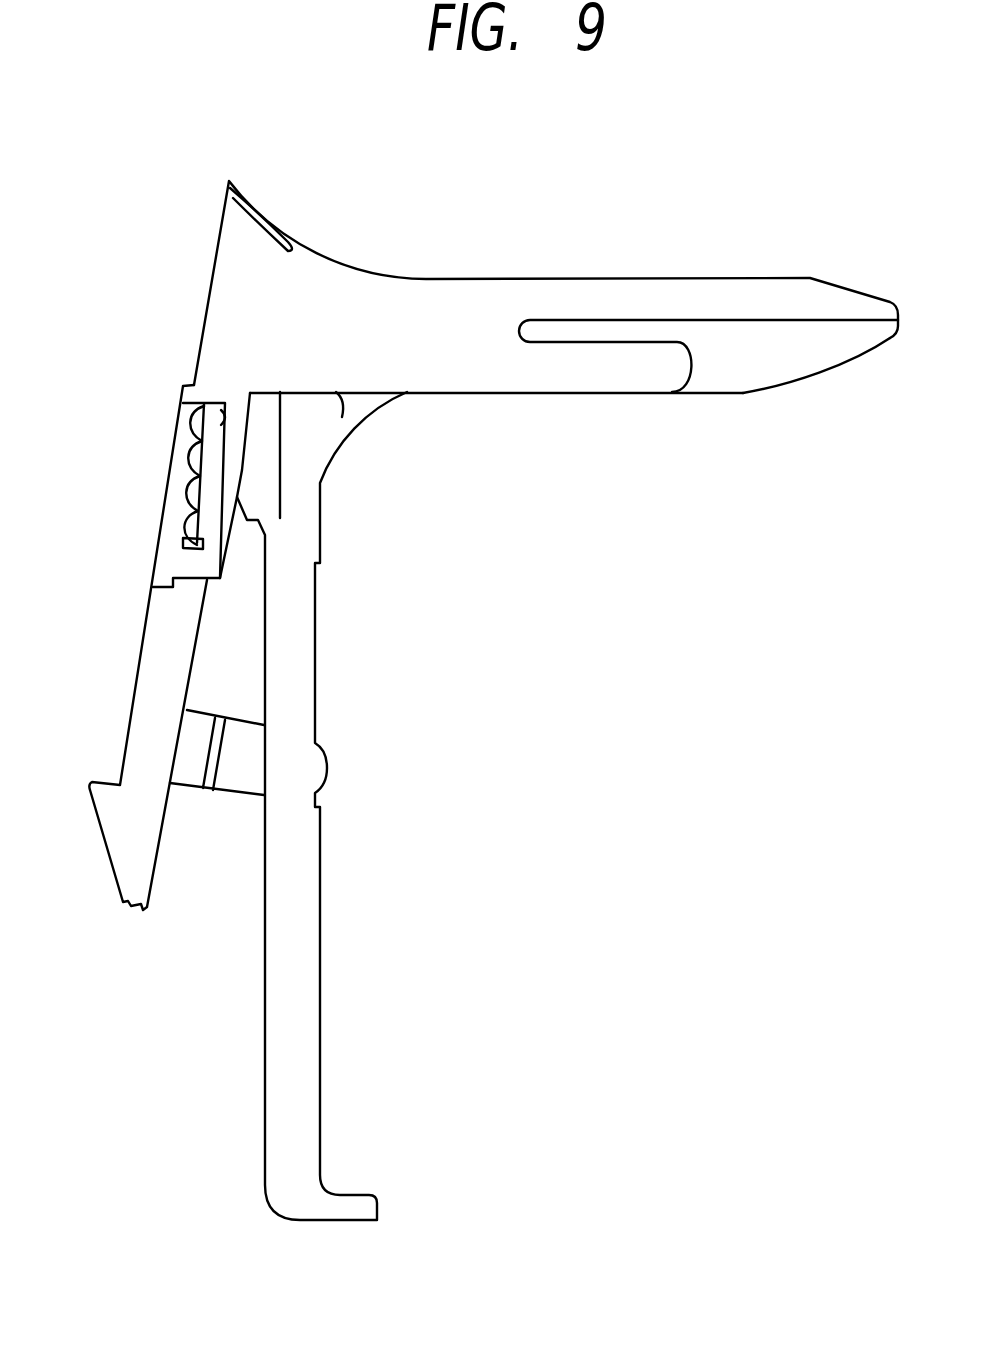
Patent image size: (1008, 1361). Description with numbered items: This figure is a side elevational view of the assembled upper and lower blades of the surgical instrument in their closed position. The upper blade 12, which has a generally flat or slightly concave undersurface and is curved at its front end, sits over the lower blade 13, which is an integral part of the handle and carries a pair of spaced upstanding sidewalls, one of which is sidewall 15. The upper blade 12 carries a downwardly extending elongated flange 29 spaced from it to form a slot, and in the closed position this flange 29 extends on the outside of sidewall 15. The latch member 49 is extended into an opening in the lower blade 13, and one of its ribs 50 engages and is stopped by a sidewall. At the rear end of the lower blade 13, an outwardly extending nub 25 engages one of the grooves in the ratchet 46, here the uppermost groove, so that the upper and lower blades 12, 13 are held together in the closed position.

The upper blade 12 is at (810, 277).
The lower blade 13 is at (737, 395).
The sidewall 15 is at (783, 345).
The elongated flange 29 is at (610, 374).
The nub 25 is at (190, 432).
The ratchet 46 is at (180, 483).
The latch member 49 is at (237, 793).
The rib 50 is at (217, 740).